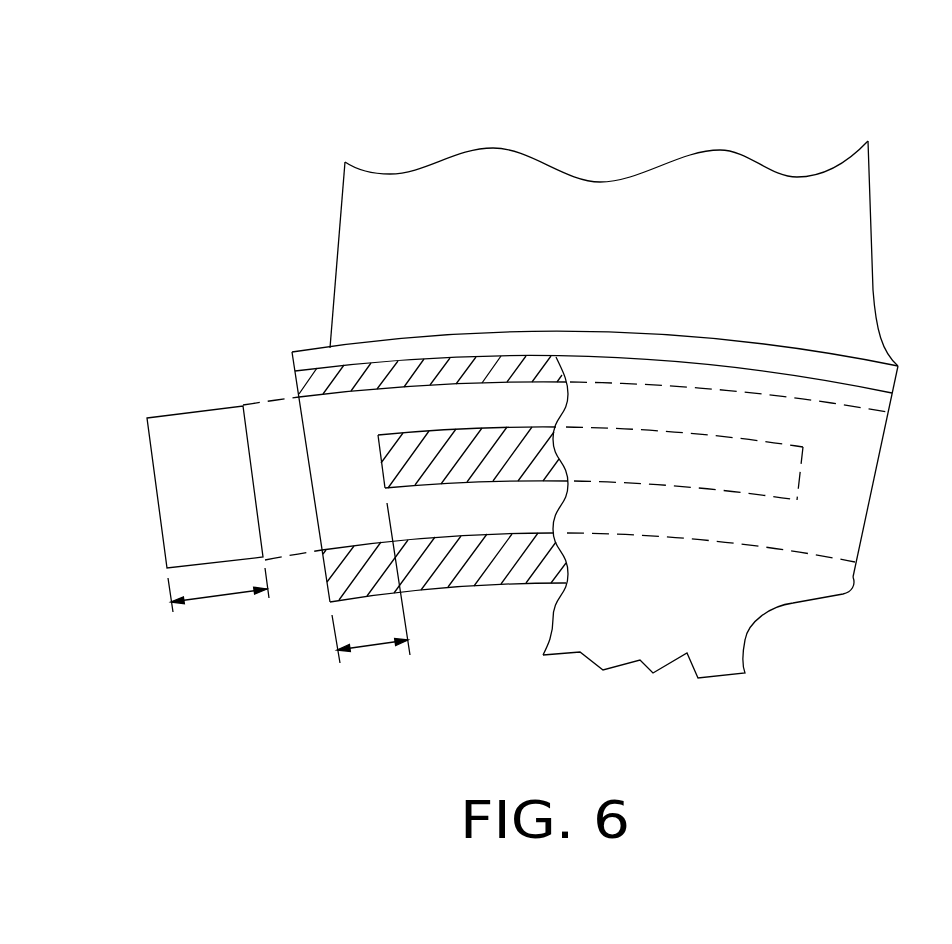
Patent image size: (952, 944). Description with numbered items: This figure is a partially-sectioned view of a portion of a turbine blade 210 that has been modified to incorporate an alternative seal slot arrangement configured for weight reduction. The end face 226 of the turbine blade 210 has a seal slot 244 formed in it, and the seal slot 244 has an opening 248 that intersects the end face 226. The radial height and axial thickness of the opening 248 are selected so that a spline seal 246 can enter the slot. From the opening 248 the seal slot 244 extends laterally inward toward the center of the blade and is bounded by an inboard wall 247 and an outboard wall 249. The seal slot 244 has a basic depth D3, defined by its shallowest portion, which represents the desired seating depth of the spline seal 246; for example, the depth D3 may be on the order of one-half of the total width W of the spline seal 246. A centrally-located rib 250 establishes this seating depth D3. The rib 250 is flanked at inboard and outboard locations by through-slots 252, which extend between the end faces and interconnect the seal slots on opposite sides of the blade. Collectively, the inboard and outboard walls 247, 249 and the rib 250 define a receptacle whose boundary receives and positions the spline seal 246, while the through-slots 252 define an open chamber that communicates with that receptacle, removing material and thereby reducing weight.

The turbine blade 210 is at (680, 110).
The end face 226 is at (293, 368).
The seal slot 244 is at (300, 452).
The spline seal 246 is at (237, 506).
The inboard wall 247 is at (348, 547).
The opening 248 is at (322, 550).
The outboard wall 249 is at (385, 393).
The rib 250 is at (382, 468).
The through-slots 252 is at (503, 415).
The total width of the spline seal W is at (220, 598).
The basic depth D3 is at (373, 650).